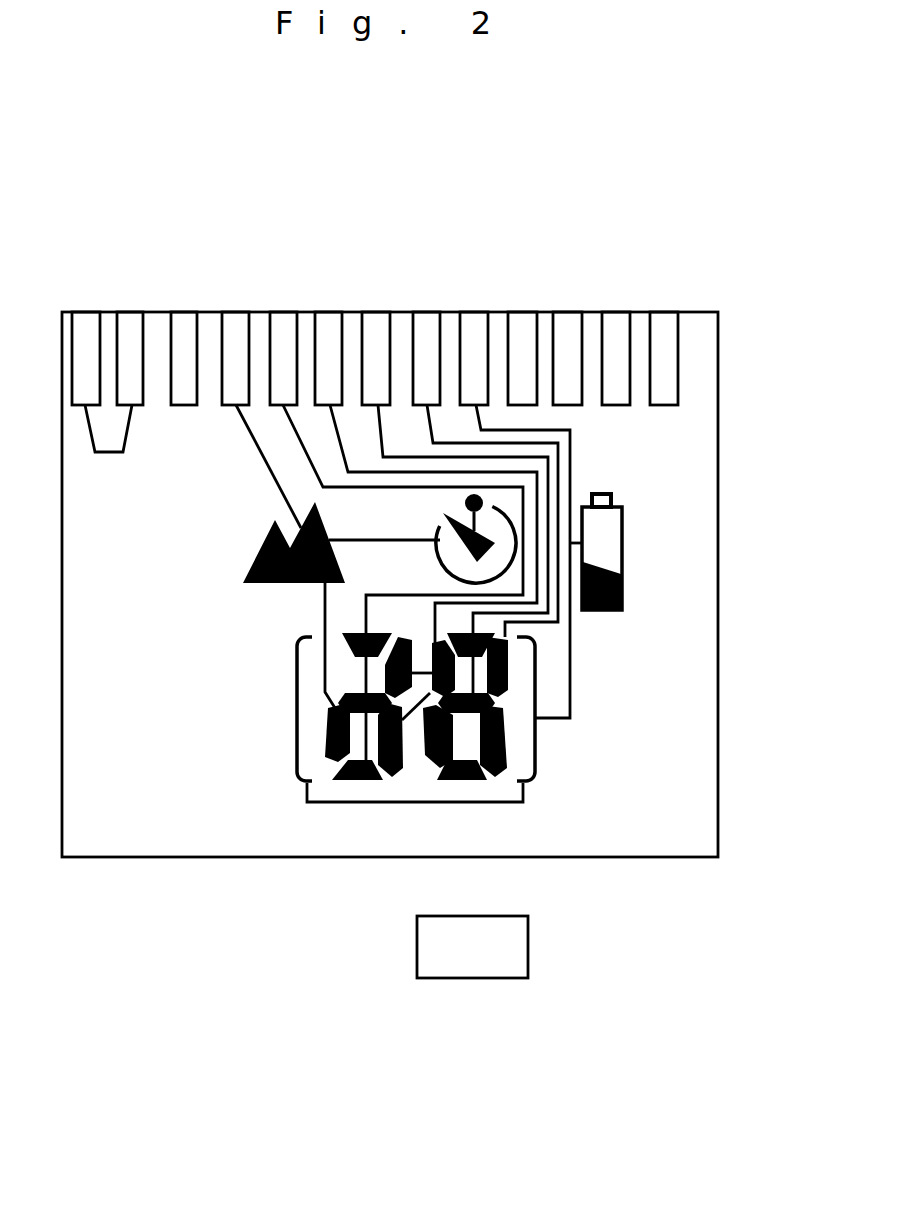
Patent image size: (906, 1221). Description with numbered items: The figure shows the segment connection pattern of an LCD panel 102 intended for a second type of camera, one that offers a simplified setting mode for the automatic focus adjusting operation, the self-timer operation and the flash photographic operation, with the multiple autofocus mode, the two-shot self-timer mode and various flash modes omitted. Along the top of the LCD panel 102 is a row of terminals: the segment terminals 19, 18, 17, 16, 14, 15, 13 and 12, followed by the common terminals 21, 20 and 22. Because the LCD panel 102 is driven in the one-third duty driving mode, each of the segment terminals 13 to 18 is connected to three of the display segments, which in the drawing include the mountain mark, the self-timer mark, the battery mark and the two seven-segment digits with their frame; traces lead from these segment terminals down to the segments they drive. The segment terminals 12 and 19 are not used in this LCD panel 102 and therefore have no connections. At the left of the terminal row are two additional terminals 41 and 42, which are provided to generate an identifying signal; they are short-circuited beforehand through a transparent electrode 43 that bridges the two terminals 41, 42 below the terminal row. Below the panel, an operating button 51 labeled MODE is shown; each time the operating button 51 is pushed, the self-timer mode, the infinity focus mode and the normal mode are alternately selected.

The terminal 42 is at (96, 316).
The terminal 41 is at (134, 316).
The segment terminal 19 is at (195, 316).
The segment terminal 18 is at (247, 316).
The segment terminal 17 is at (293, 316).
The segment terminal 16 is at (337, 316).
The segment terminal 14 is at (387, 318).
The segment terminal 15 is at (437, 320).
The segment terminal 13 is at (483, 316).
The segment terminal 12 is at (532, 314).
The common terminal 21 is at (580, 316).
The common terminal 20 is at (627, 316).
The common terminal 22 is at (675, 316).
The transparent electrode 43 is at (113, 452).
The LCD panel 102 is at (718, 698).
The operating button 51 is at (528, 947).